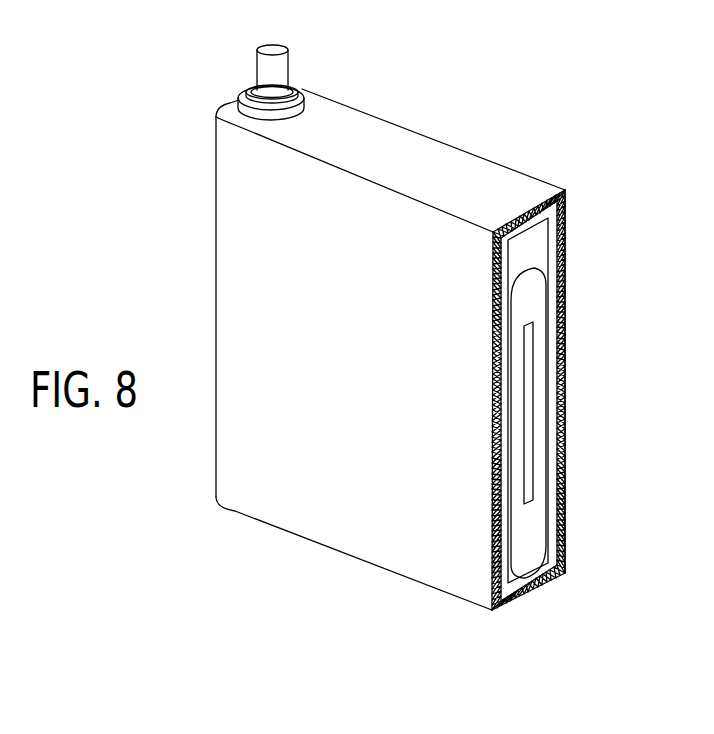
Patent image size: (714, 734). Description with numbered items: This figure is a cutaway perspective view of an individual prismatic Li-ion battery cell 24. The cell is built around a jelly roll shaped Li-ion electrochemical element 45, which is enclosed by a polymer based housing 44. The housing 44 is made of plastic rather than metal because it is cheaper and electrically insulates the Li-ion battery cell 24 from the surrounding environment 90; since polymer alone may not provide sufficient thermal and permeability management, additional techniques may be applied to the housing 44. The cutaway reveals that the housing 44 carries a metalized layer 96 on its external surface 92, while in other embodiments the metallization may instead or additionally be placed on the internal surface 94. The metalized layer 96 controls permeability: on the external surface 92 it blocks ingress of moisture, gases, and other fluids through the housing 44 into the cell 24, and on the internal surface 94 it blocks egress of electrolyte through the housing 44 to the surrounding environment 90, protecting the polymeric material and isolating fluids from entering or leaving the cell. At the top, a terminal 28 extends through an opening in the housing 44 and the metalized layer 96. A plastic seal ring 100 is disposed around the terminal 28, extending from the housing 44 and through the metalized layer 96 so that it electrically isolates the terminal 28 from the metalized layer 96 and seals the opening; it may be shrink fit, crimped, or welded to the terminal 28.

The Li-ion battery cell 24 is at (394, 74).
The terminal 28 is at (271, 47).
The surrounding environment 90 is at (470, 122).
The metalized layer 96 is at (535, 209).
The polymer based housing 44 is at (557, 243).
The Li-ion electrochemical element 45 is at (538, 397).
The external surface 92 is at (509, 490).
The internal surface 94 is at (514, 458).
The plastic seal ring 100 is at (256, 107).